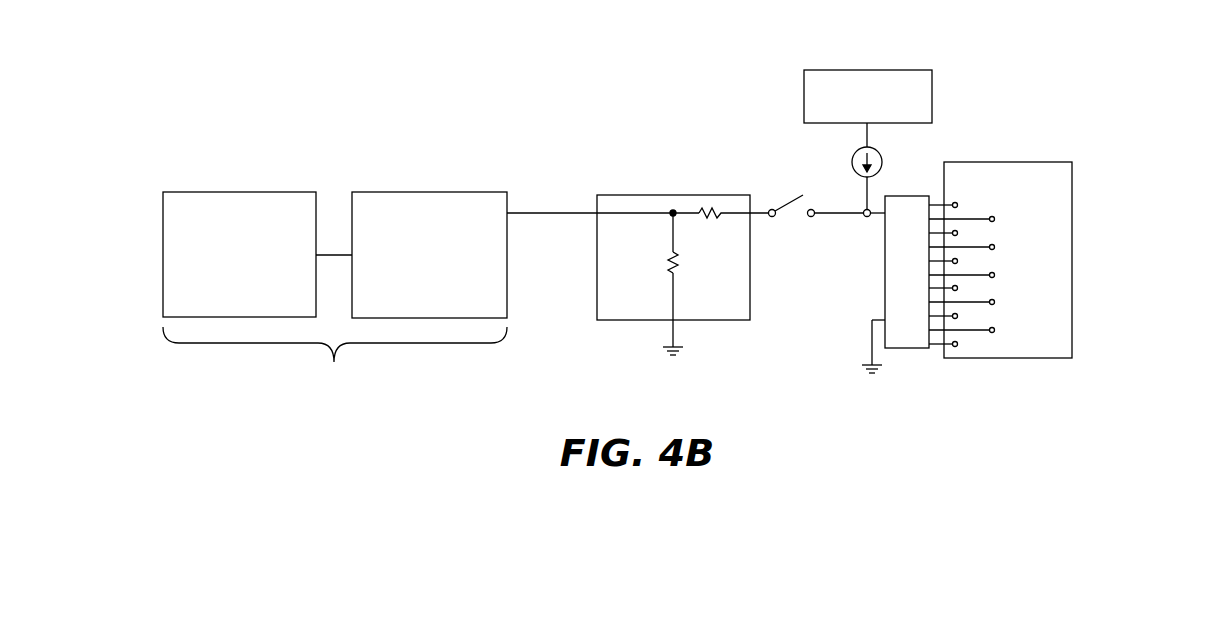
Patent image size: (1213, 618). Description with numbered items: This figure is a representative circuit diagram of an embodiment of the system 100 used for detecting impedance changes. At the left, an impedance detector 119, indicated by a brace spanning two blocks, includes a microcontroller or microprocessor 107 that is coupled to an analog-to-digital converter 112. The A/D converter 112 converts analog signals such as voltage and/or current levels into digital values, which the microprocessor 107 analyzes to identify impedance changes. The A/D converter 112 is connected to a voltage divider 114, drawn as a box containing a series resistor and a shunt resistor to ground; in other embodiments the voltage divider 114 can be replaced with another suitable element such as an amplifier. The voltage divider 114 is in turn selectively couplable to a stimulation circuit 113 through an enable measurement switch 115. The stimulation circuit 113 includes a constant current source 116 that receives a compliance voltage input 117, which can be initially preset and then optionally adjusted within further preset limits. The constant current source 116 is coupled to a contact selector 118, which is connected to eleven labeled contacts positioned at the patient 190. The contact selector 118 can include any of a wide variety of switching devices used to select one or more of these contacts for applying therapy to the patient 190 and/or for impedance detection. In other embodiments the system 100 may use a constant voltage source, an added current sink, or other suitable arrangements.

The system 100 is at (595, 131).
The microprocessor 107 is at (282, 192).
The analog-to-digital converter 112 is at (472, 192).
The stimulation circuit 113 is at (835, 332).
The voltage divider 114 is at (718, 320).
The enable measurement switch 115 is at (786, 183).
The constant current source 116 is at (883, 157).
The compliance voltage input 117 is at (907, 70).
The contact selector 118 is at (885, 243).
The impedance detector 119 is at (335, 362).
The patient 190 is at (1072, 198).